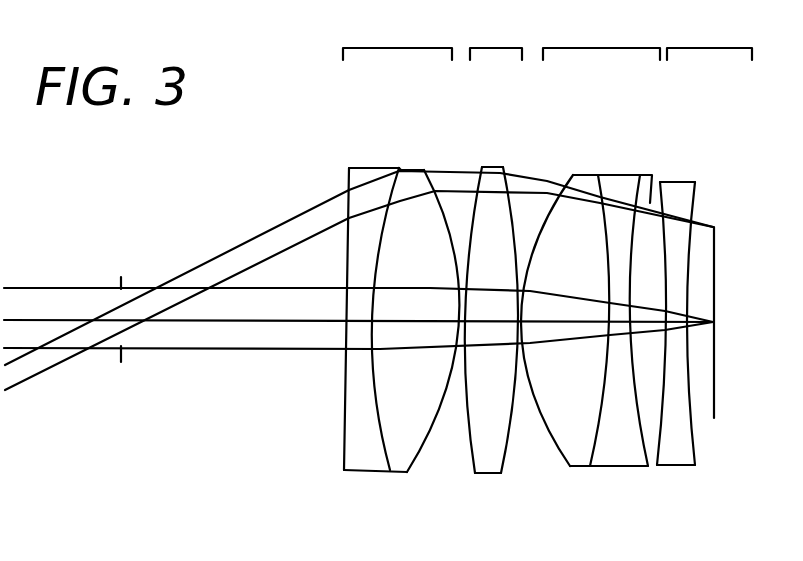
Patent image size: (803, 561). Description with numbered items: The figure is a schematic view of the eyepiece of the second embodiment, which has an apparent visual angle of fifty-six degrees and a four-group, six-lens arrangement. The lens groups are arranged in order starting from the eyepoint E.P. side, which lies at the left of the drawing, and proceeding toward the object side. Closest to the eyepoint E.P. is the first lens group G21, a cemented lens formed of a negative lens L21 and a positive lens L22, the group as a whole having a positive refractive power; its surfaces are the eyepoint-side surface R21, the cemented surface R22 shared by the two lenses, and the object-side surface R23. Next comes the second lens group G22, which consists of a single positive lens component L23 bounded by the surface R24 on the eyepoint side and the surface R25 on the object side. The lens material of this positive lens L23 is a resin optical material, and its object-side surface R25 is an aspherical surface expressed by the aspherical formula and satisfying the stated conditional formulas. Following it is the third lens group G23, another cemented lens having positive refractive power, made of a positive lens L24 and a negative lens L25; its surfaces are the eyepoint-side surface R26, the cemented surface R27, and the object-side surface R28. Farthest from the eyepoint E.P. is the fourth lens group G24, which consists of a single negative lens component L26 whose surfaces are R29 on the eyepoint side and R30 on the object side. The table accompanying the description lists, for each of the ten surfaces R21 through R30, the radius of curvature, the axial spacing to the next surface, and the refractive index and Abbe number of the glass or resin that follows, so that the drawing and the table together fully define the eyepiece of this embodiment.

The first lens group G21 is at (397, 278).
The second lens group G22 is at (500, 278).
The third lens group G23 is at (591, 278).
The fourth lens group G24 is at (709, 278).
The negative lens L21 is at (363, 460).
The positive lens L22 is at (402, 458).
The positive lens component L23 is at (490, 470).
The positive lens L24 is at (580, 453).
The negative lens L25 is at (625, 458).
The negative lens component L26 is at (677, 453).
The lens surface R21 is at (349, 201).
The lens surface R22 is at (404, 168).
The lens surface R23 is at (434, 172).
The lens surface R24 is at (482, 169).
The lens surface R25 is at (509, 205).
The lens surface R26 is at (557, 199).
The lens surface R27 is at (601, 198).
The lens surface R28 is at (637, 172).
The lens surface R29 is at (661, 203).
The lens surface R30 is at (694, 210).
The eyepoint E.P. is at (121, 303).